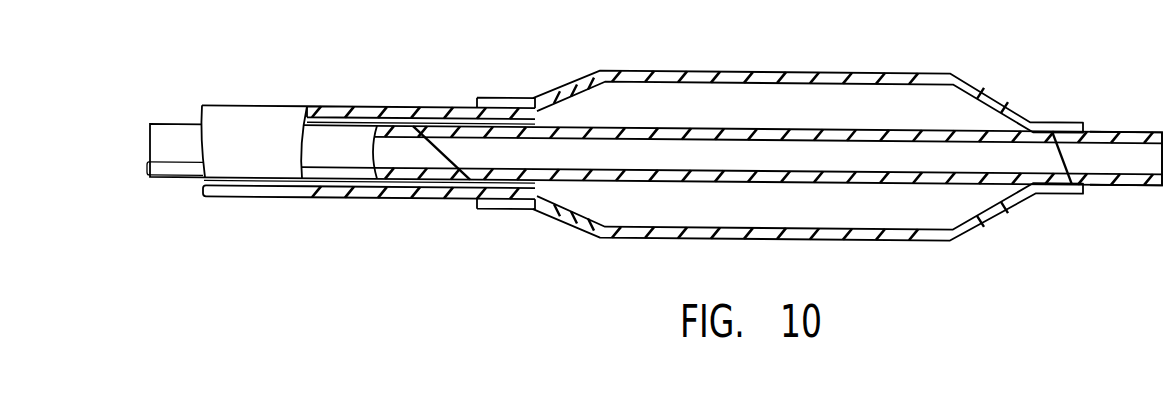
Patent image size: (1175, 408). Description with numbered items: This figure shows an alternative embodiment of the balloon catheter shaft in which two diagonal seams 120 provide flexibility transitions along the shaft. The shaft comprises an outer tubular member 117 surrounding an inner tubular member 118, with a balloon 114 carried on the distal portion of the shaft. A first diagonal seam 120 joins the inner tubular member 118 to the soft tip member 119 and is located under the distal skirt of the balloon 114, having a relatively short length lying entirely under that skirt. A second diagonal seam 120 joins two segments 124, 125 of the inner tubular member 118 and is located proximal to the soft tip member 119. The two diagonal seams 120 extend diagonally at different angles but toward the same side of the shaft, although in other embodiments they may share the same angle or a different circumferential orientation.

The balloon 114 is at (782, 72).
The outer tubular member 117 is at (360, 107).
The inner tubular member 118 is at (993, 178).
The tip member 119 is at (1115, 183).
The diagonal seam 120 is at (458, 132).
The segment of the inner tubular member 124 is at (403, 175).
The segment of the inner tubular member 125 is at (585, 178).